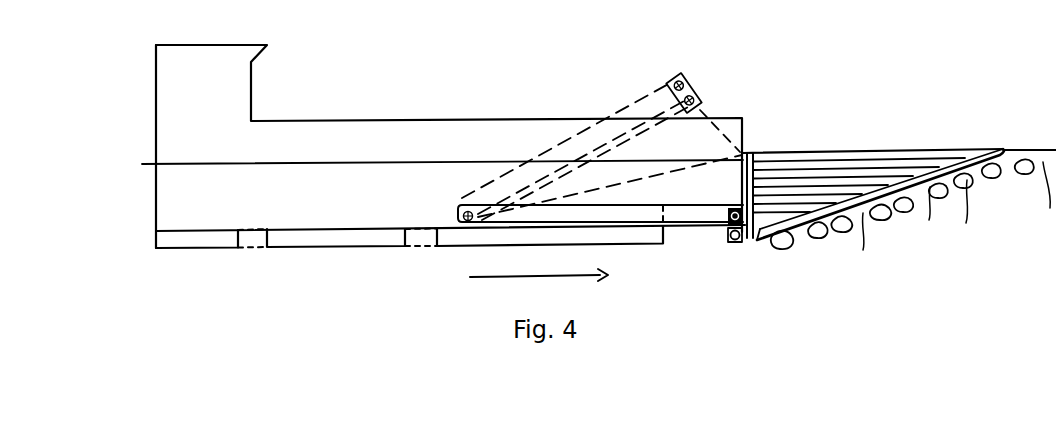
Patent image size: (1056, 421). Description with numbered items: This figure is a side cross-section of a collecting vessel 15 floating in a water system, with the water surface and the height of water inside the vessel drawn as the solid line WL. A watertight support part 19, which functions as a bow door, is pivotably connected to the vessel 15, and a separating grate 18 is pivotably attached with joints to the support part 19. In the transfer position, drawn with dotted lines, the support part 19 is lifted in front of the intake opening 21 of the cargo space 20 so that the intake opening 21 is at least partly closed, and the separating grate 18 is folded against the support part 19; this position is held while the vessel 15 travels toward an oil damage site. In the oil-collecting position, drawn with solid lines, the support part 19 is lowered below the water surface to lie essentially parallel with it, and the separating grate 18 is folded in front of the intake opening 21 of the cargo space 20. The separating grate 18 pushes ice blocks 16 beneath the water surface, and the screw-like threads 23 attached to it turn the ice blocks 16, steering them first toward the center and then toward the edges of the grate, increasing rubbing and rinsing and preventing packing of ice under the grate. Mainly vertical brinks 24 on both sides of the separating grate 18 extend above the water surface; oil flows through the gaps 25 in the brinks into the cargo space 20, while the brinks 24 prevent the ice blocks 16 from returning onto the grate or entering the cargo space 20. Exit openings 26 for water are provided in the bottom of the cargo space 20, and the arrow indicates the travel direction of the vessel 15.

The collecting vessel 15 is at (454, 88).
The ice blocks 16 is at (787, 238).
The separating grate 18 is at (710, 104).
The support part 19 is at (607, 114).
The cargo space 20 is at (450, 172).
The intake opening 21 is at (746, 153).
The screw-like threads 23 is at (863, 213).
The brinks 24 is at (850, 168).
The gaps 25 is at (813, 162).
The exit openings 26 is at (255, 253).